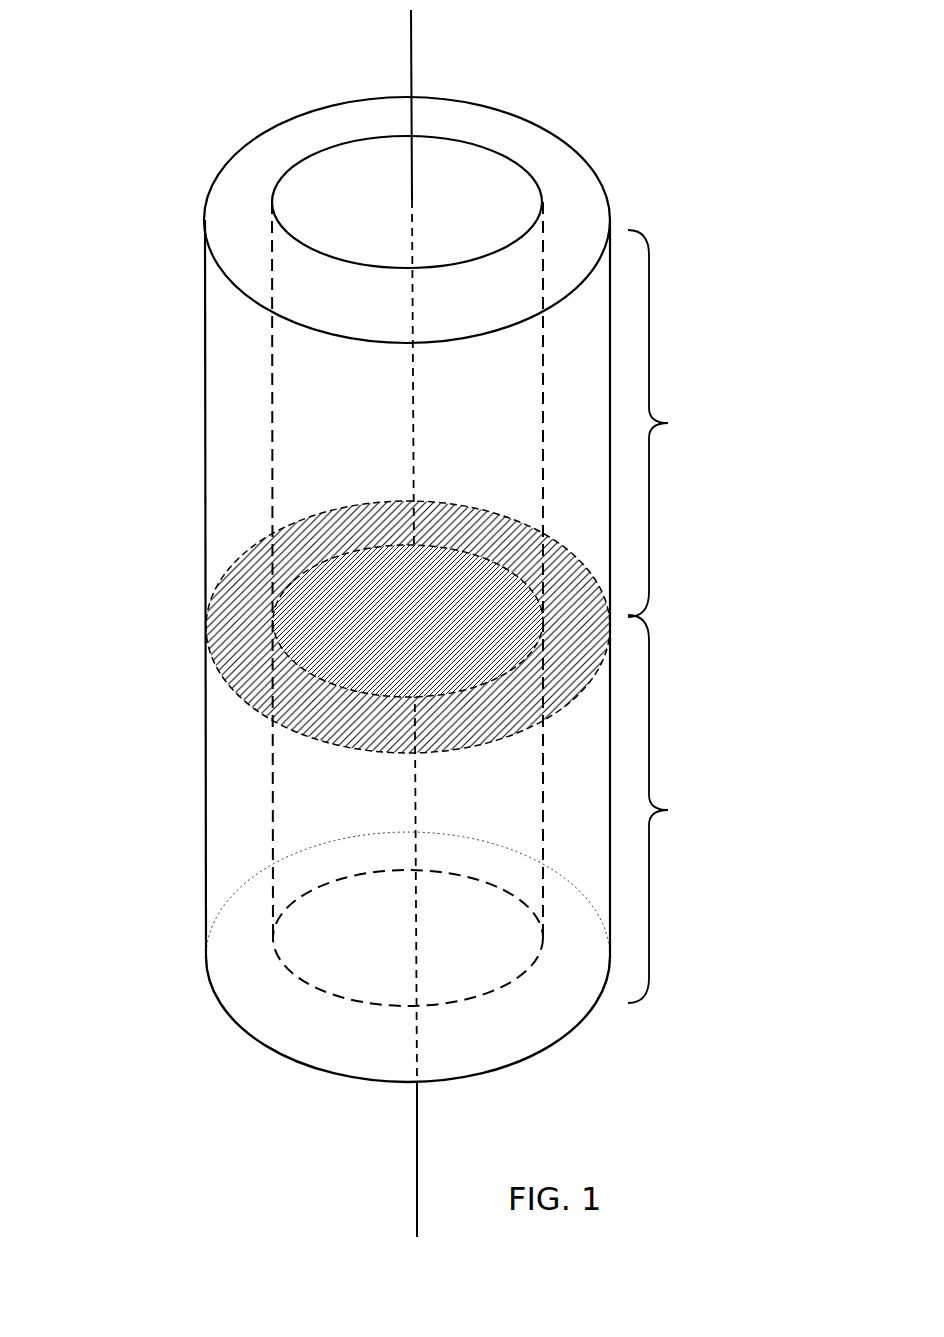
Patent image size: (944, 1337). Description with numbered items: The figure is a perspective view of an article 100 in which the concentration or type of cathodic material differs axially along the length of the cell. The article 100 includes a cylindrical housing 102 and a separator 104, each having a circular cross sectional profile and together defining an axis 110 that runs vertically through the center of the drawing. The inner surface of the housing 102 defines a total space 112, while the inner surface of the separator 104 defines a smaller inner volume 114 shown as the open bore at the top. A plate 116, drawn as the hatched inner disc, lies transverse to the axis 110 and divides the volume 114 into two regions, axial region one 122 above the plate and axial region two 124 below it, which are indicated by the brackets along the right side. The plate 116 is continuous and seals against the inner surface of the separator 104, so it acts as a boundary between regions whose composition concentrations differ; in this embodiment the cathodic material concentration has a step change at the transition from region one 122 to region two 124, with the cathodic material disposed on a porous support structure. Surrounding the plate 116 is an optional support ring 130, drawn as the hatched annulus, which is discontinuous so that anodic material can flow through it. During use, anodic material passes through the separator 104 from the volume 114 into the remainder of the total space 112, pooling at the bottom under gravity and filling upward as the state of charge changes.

The article 100 is at (662, 133).
The cylindrical housing 102 is at (205, 406).
The separator 104 is at (270, 505).
The axis 110 is at (411, 70).
The total space 112 is at (601, 247).
The volume 114 is at (477, 242).
The plate 116 is at (327, 625).
The support ring 130 is at (258, 678).
The axial region one 122 is at (682, 423).
The axial region two 124 is at (677, 809).